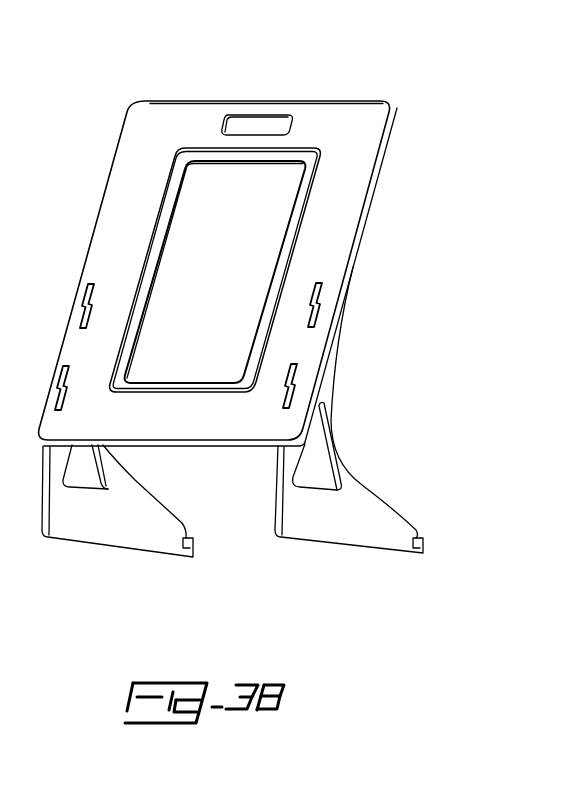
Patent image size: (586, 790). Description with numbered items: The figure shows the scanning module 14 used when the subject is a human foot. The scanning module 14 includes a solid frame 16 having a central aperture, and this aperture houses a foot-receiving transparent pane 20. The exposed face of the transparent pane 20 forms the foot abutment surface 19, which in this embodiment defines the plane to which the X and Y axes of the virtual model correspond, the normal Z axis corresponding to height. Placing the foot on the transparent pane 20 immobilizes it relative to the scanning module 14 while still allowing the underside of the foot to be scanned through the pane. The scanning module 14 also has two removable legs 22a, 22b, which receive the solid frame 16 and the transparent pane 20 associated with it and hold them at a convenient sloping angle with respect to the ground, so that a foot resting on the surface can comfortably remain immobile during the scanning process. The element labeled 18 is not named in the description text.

The scanning module 14 is at (422, 168).
The solid frame 16 is at (128, 207).
The display window 18 is at (205, 177).
The foot abutment surface 19 is at (207, 336).
The transparent pane 20 is at (265, 240).
The removable leg 22a is at (142, 517).
The removable leg 22b is at (367, 503).